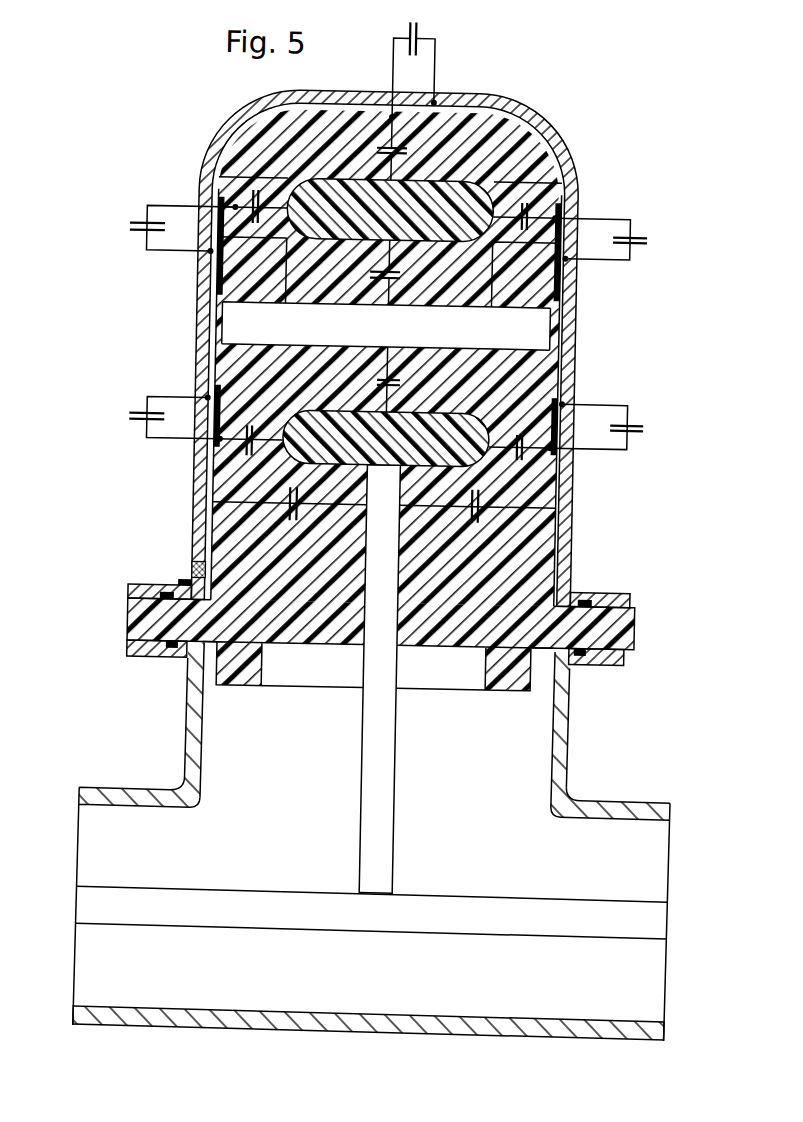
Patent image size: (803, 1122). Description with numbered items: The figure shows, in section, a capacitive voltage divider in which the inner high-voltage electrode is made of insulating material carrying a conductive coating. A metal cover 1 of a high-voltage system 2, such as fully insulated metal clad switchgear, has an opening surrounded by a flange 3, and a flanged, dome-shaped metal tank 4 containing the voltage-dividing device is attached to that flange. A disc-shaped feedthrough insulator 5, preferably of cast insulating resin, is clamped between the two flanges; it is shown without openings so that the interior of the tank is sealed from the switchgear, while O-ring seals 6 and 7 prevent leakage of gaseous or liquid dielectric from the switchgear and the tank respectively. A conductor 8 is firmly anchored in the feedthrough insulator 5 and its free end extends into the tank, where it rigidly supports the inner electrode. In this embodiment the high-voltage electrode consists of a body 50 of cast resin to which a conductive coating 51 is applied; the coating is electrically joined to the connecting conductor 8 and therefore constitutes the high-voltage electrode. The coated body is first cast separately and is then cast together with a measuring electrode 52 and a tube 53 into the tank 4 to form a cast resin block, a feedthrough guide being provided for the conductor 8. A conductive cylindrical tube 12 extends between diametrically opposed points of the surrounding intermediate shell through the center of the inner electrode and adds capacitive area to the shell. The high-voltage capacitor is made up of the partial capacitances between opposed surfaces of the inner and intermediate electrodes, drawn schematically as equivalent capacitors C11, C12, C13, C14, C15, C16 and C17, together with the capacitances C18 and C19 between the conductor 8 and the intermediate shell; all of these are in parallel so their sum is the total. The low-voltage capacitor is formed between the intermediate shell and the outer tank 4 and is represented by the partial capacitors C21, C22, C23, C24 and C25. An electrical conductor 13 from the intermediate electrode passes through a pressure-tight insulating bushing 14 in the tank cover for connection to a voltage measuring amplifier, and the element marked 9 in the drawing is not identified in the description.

The metal cover 1 is at (126, 803).
The high-voltage system 2 is at (107, 972).
The flange 3 is at (188, 652).
The dome-shaped metal tank 4 is at (226, 506).
The feedthrough insulator 5 is at (134, 622).
The O-ring seal 6 is at (158, 654).
The O-ring seal 7 is at (175, 589).
The conductor 8 is at (390, 735).
The diaphragm 9 is at (471, 914).
The conductive cylindrical tube 12 is at (566, 362).
The electrical conductor 13 is at (190, 584).
The insulating bushing 14 is at (202, 567).
The body 50 is at (260, 152).
The conductive coating 51 is at (293, 178).
The measuring electrode 52 is at (542, 149).
The tube 53 is at (556, 300).
The equivalent capacitor C11 is at (234, 208).
The equivalent capacitor C12 is at (346, 104).
The equivalent capacitor C13 is at (554, 197).
The equivalent capacitor C14 is at (224, 283).
The equivalent capacitor C15 is at (223, 401).
The equivalent capacitor C16 is at (231, 381).
The equivalent capacitor C17 is at (566, 382).
The partial capacitance C18 is at (547, 515).
The partial capacitance C19 is at (293, 499).
The low-voltage partial capacitor C21 is at (166, 226).
The low-voltage partial capacitor C22 is at (438, 68).
The low-voltage partial capacitor C23 is at (617, 238).
The low-voltage partial capacitor C24 is at (159, 413).
The low-voltage partial capacitor C25 is at (614, 424).